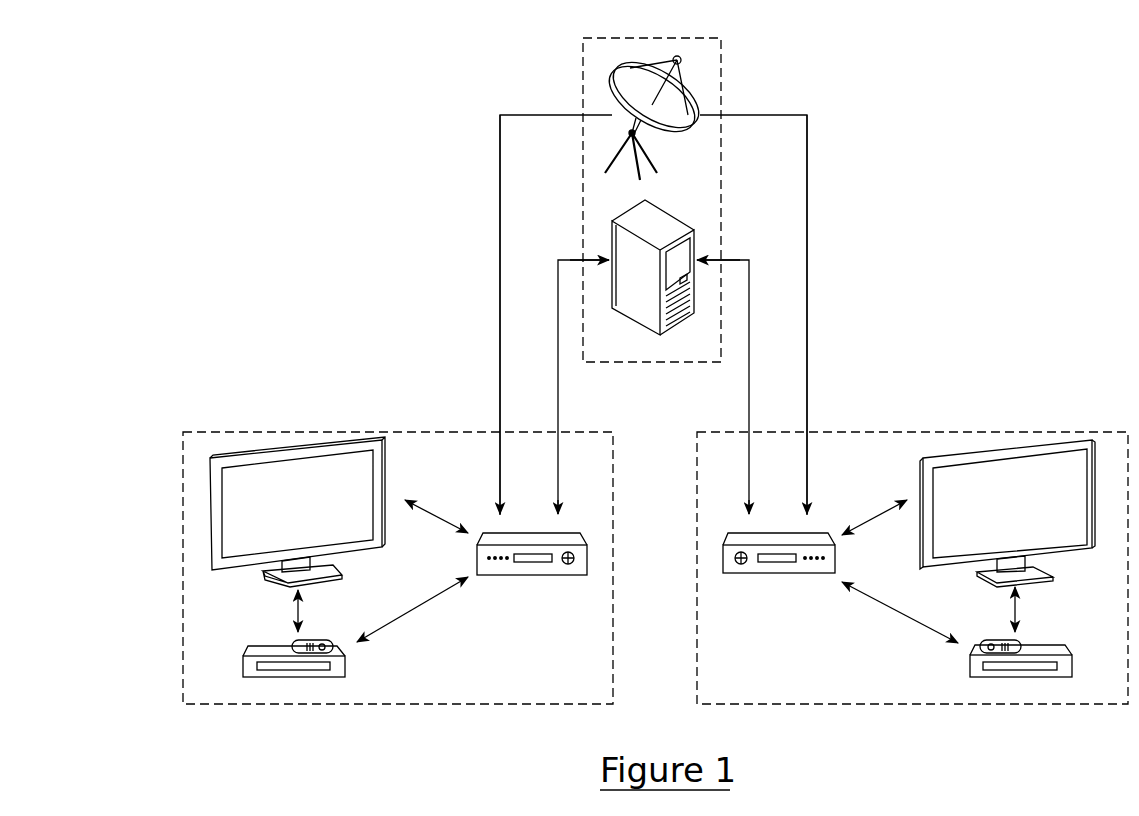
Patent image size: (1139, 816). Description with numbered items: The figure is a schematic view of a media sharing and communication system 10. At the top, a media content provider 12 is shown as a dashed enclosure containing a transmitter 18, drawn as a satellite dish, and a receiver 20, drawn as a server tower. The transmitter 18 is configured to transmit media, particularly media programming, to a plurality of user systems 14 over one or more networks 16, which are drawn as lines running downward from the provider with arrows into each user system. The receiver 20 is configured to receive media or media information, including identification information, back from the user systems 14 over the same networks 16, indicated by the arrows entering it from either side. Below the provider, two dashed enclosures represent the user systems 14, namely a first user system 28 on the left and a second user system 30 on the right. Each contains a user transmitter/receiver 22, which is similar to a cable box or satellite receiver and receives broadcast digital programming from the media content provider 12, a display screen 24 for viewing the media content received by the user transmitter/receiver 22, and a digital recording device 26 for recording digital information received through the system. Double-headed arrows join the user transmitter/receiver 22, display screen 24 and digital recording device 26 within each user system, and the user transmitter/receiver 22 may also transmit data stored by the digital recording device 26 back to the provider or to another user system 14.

The media sharing and communication system 10 is at (932, 160).
The media content provider 12 is at (600, 38).
The user systems 14 is at (396, 432).
The networks 16 is at (500, 318).
The transmitter 18 is at (622, 106).
The receiver 20 is at (668, 214).
The user transmitter/receiver 22 is at (531, 576).
The display screen 24 is at (382, 465).
The digital recording device 26 is at (345, 664).
The first user system 28 is at (612, 432).
The second user system 30 is at (697, 432).